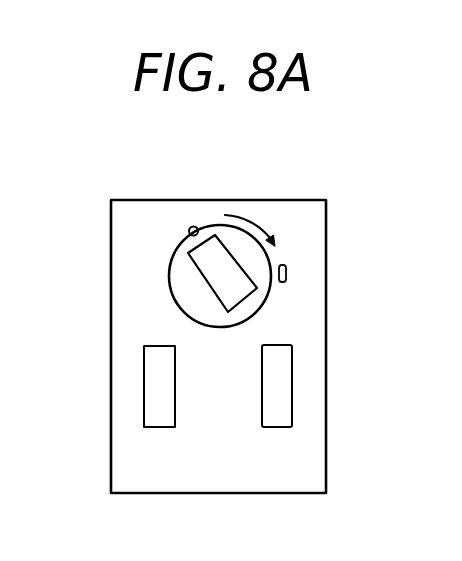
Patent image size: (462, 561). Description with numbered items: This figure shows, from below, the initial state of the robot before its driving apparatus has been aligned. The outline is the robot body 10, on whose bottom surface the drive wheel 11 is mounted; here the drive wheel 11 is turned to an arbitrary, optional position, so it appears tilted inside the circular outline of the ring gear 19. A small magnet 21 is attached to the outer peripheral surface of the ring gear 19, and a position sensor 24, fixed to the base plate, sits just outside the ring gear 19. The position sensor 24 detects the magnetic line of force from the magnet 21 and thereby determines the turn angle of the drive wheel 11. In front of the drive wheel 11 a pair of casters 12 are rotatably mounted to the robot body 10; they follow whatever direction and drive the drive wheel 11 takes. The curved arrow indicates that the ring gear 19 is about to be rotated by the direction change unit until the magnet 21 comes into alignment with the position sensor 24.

The robot body 10 is at (317, 214).
The drive wheel 11 is at (210, 287).
The casters 12 is at (157, 398).
The ring gear 19 is at (174, 266).
The magnet 21 is at (196, 226).
The position sensor 24 is at (283, 273).